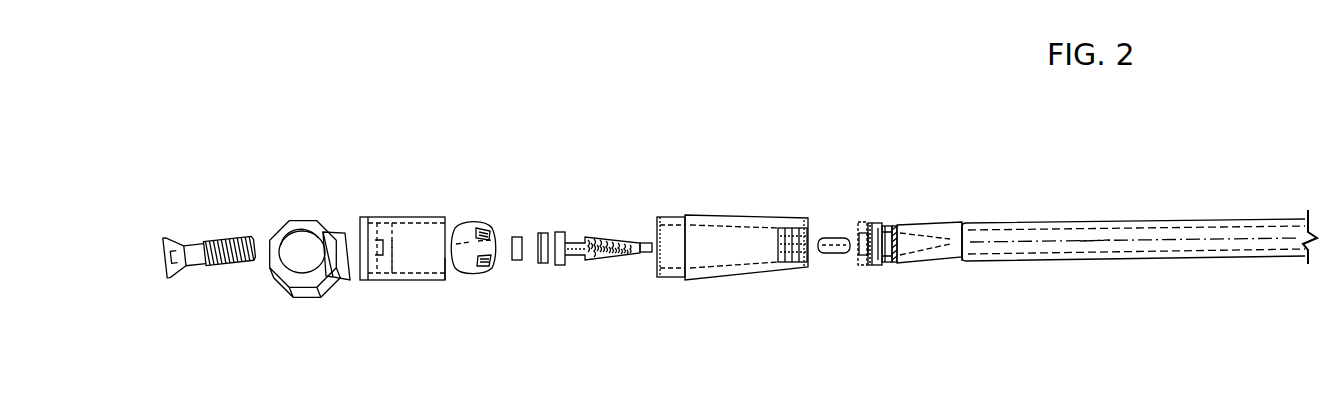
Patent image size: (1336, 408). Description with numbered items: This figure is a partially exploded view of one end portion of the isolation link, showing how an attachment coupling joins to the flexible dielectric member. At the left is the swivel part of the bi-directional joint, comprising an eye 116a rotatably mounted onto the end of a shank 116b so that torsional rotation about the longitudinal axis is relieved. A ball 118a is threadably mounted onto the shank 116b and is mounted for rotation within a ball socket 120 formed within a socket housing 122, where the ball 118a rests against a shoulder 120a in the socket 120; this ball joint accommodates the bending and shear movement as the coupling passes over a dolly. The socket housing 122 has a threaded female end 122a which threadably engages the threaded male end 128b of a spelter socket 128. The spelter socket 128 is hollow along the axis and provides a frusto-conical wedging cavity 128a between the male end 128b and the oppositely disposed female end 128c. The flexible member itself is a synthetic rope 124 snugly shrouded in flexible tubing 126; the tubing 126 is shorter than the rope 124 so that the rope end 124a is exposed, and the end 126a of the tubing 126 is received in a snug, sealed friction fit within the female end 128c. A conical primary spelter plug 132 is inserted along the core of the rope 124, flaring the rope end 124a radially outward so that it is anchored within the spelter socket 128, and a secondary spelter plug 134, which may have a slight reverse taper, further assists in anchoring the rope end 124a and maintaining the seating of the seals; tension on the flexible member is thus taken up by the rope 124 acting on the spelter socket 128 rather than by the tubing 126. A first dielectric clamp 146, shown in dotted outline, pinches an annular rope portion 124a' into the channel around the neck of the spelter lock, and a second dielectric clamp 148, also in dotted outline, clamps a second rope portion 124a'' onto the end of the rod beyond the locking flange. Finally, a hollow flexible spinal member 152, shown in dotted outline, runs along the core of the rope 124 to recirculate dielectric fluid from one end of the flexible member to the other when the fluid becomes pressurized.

The eye 116a is at (317, 297).
The shank 116b is at (232, 238).
The ball 118a is at (478, 222).
The ball socket 120 is at (385, 236).
The shoulder 120a is at (388, 272).
The socket housing 122 is at (397, 217).
The threaded female end 122a is at (447, 268).
The rope 124 is at (1092, 238).
The rope end 124a is at (936, 221).
The annular rope portion 124a' is at (946, 277).
The second rope portion 124a'' is at (925, 201).
The flexible tubing 126 is at (1139, 239).
The tube end 126a is at (990, 223).
The spelter socket 128 is at (742, 216).
The frusto-conical wedging cavity 128a is at (707, 240).
The threaded male end 128b is at (677, 217).
The female end 128c is at (811, 260).
The primary spelter plug 132 is at (612, 273).
The secondary spelter plug 134 is at (840, 255).
The first dielectric clamp 146 is at (890, 287).
The second dielectric clamp 148 is at (863, 207).
The hollow flexible spinal member 152 is at (1247, 238).